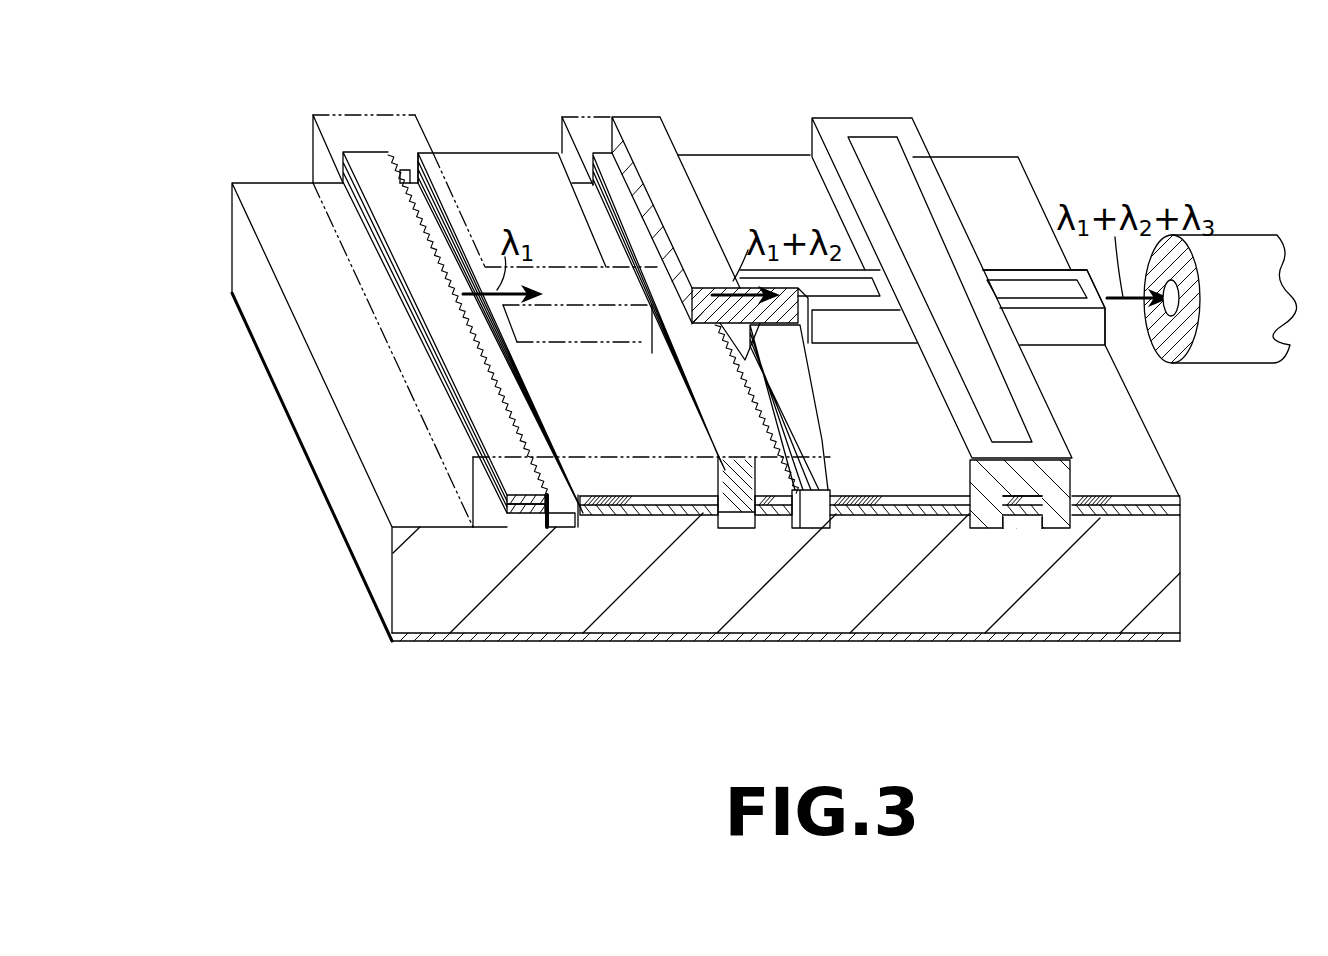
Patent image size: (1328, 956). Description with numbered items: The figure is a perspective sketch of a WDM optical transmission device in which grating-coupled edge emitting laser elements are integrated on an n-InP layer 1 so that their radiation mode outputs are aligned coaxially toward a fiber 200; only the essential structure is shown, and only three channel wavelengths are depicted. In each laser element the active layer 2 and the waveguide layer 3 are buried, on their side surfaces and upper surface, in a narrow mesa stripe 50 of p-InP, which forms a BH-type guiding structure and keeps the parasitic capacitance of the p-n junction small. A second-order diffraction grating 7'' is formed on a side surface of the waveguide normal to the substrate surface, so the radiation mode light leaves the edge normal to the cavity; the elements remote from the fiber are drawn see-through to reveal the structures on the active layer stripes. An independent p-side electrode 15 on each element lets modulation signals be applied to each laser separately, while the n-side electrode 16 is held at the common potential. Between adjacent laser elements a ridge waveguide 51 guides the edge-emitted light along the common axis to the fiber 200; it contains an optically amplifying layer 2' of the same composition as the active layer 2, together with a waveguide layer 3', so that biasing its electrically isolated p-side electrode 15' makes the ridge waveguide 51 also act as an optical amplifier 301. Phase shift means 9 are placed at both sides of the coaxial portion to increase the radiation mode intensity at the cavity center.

The n-InP layer 1 is at (1061, 615).
The active layer 2 is at (513, 602).
The waveguide layer 3 is at (533, 610).
The optically amplifying layer 2' is at (880, 605).
The waveguide layer 3' is at (880, 606).
The second-order diffraction grating 7'' is at (609, 318).
The phase shift means 9 is at (465, 322).
The p-side electrode 15 is at (940, 233).
The p-side electrode 15' is at (926, 347).
The n-side electrode 16 is at (918, 648).
The mesa stripe 50 is at (934, 264).
The ridge waveguide 51 is at (926, 248).
The optical amplifier 301 is at (1044, 307).
The fiber 200 is at (1227, 247).